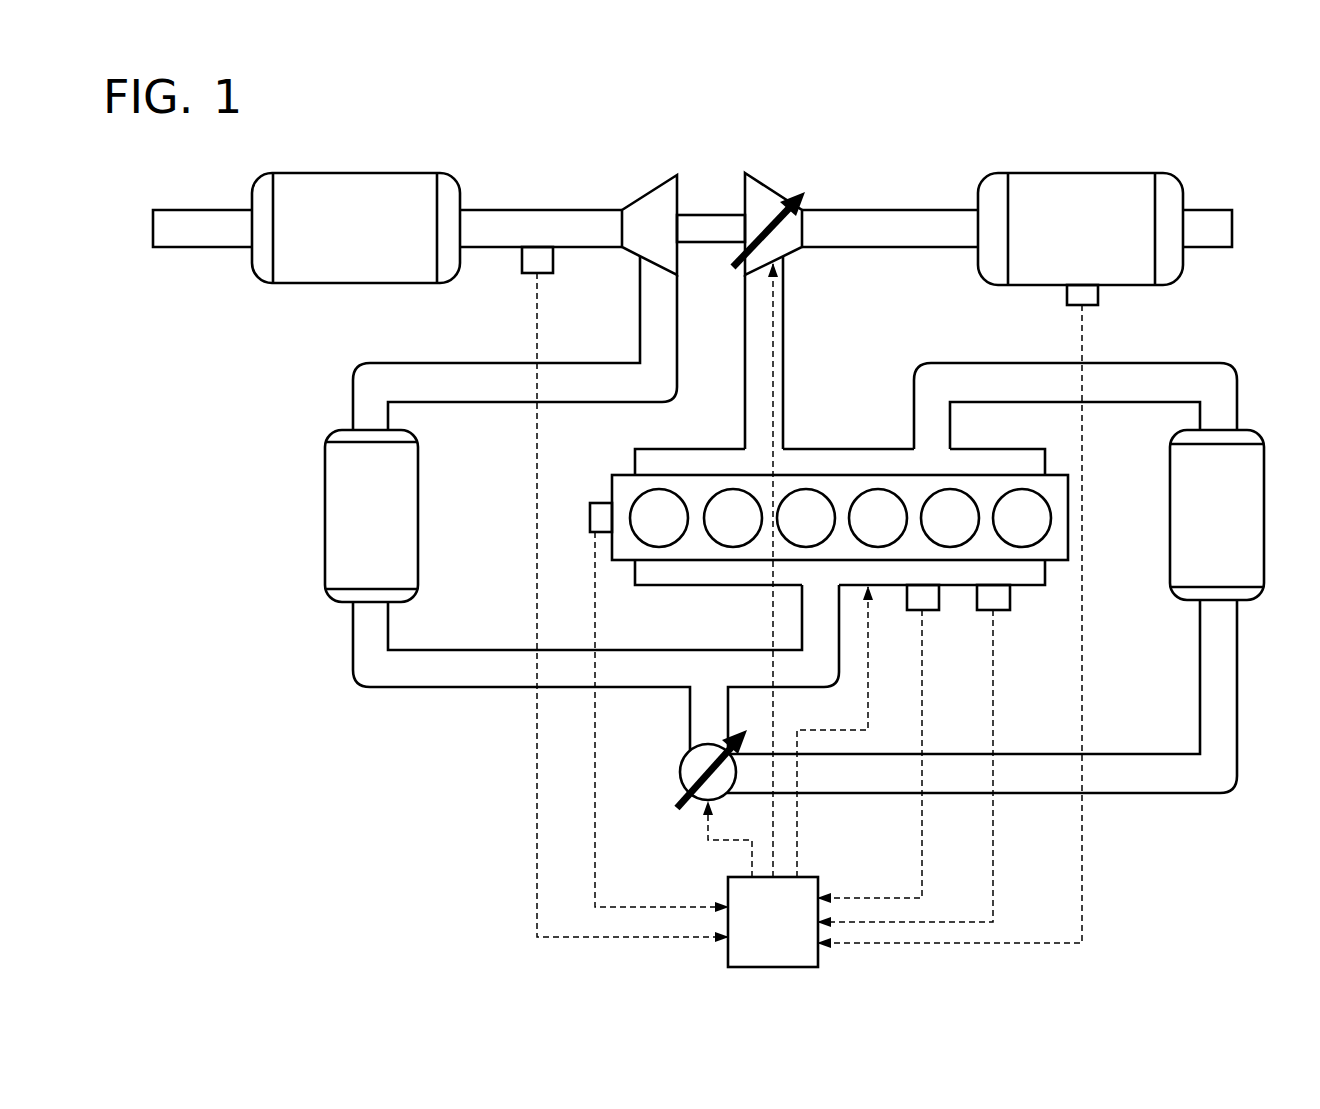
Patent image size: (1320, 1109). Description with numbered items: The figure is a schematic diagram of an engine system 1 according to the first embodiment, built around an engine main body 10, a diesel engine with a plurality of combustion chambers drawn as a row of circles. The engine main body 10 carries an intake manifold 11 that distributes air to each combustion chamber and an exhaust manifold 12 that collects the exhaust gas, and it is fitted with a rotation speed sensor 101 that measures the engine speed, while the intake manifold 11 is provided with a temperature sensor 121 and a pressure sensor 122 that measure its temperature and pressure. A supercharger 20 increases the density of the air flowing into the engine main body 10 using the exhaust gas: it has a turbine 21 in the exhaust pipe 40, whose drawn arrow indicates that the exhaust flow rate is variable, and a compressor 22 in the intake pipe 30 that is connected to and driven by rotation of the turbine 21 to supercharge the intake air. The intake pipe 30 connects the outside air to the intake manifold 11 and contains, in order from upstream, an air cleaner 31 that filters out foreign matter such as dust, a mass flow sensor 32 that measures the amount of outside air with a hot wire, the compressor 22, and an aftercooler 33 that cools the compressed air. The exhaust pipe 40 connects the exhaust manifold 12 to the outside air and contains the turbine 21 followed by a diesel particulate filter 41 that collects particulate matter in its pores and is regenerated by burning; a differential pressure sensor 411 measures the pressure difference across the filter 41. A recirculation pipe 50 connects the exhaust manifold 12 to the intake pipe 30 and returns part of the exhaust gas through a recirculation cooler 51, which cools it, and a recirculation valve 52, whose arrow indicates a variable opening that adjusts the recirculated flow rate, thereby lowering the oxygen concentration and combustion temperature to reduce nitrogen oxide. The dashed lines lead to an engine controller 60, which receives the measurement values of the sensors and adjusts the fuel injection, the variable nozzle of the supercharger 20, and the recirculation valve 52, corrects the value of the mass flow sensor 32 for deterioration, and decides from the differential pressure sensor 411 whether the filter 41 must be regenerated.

The engine system 1 is at (1258, 182).
The engine main body 10 is at (840, 495).
The intake manifold 11 is at (710, 588).
The exhaust manifold 12 is at (806, 448).
The rotation speed sensor 101 is at (600, 502).
The temperature sensor 121 is at (930, 613).
The pressure sensor 122 is at (1002, 613).
The supercharger 20 is at (710, 195).
The turbine 21 is at (765, 187).
The compressor 22 is at (652, 193).
The intake pipe 30 is at (542, 181).
The air cleaner 31 is at (357, 180).
The mass flow sensor 32 is at (528, 280).
The aftercooler 33 is at (335, 511).
The exhaust pipe 40 is at (880, 185).
The diesel particulate filter 41 is at (1112, 182).
The differential pressure sensor 411 is at (1098, 302).
The recirculation pipe 50 is at (1252, 355).
The recirculation cooler 51 is at (1182, 513).
The recirculation valve 52 is at (683, 760).
The engine controller 60 is at (727, 890).